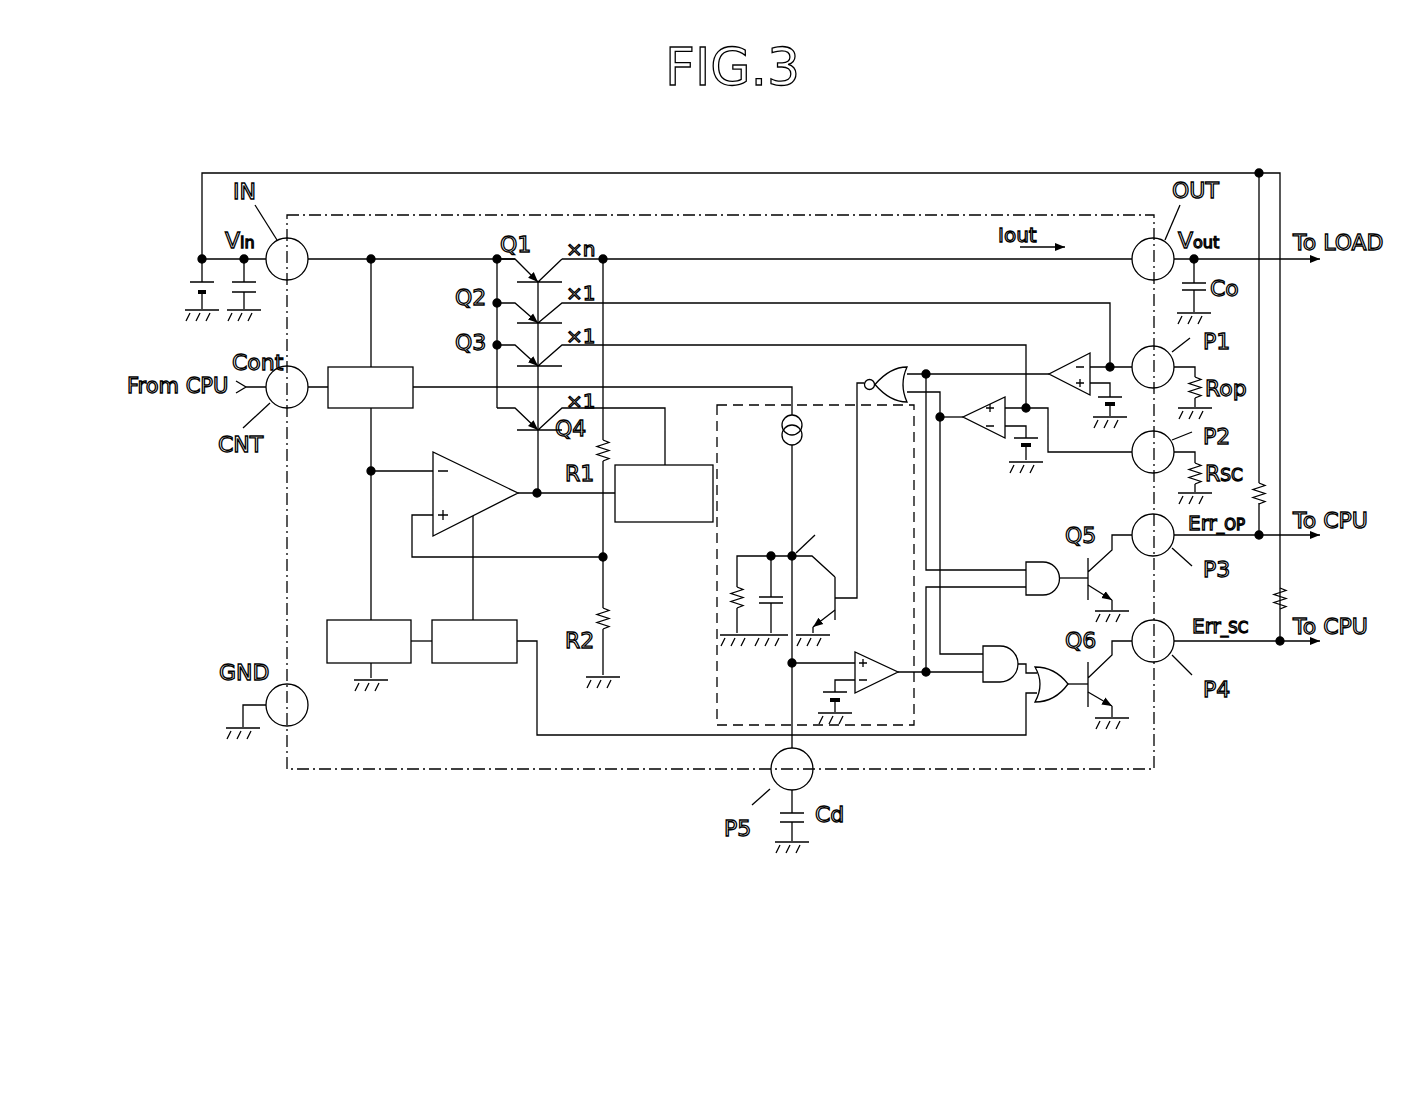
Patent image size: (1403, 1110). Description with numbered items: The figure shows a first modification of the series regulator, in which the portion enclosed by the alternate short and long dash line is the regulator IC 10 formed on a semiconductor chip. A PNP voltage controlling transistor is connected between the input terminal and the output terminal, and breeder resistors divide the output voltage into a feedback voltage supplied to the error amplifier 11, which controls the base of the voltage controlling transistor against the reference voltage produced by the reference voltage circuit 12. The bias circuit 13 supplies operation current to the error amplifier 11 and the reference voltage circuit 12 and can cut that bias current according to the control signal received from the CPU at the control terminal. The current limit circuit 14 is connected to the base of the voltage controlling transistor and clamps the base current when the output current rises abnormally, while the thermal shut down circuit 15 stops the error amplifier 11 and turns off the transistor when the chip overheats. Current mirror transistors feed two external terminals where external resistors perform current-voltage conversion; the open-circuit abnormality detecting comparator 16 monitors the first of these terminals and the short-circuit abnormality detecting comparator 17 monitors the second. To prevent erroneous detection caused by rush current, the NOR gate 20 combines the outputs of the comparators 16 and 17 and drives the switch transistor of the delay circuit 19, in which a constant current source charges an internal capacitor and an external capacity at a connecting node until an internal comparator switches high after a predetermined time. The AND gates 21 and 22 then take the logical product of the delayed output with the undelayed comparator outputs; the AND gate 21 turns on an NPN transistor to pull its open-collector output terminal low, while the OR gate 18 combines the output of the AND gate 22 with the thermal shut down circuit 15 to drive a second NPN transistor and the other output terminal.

The regulator IC 10 is at (688, 215).
The error amplifier 11 is at (467, 467).
The reference voltage circuit 12 is at (348, 618).
The bias circuit 13 is at (392, 365).
The current limit circuit 14 is at (665, 523).
The thermal shut down circuit 15 is at (473, 665).
The open-circuit abnormality detecting comparator 16 is at (1062, 368).
The short-circuit abnormality detecting comparator 17 is at (985, 403).
The OR gate 18 is at (1055, 702).
The delay circuit 19 is at (717, 650).
The NOR gate 20 is at (882, 372).
The AND gate 21 is at (1035, 562).
The AND gate 22 is at (997, 647).